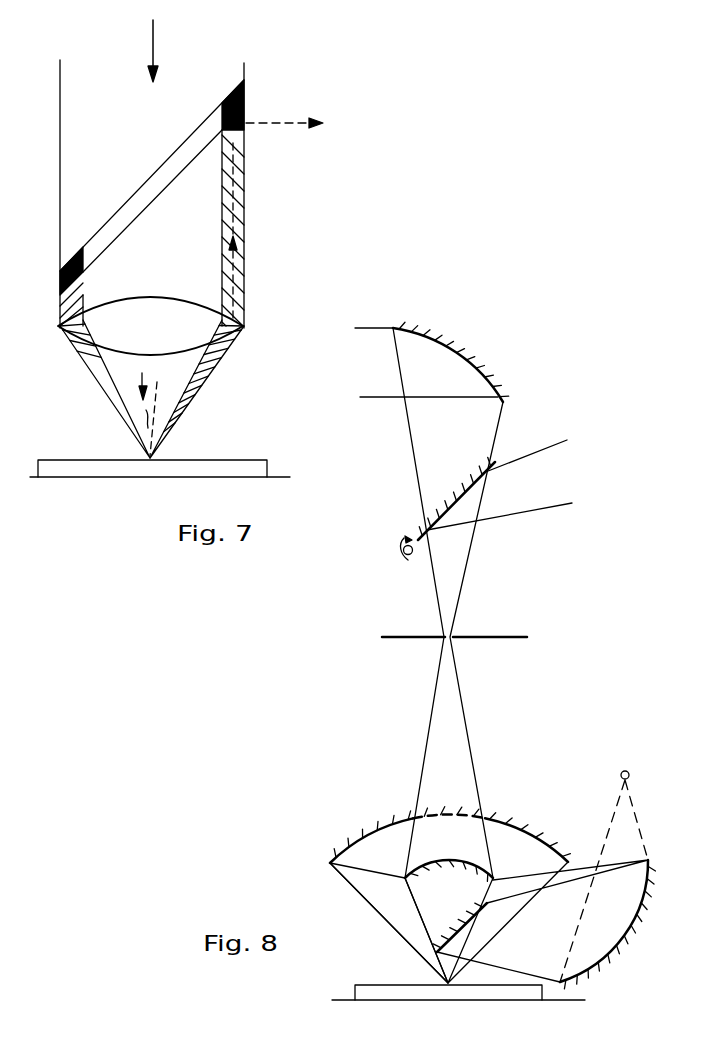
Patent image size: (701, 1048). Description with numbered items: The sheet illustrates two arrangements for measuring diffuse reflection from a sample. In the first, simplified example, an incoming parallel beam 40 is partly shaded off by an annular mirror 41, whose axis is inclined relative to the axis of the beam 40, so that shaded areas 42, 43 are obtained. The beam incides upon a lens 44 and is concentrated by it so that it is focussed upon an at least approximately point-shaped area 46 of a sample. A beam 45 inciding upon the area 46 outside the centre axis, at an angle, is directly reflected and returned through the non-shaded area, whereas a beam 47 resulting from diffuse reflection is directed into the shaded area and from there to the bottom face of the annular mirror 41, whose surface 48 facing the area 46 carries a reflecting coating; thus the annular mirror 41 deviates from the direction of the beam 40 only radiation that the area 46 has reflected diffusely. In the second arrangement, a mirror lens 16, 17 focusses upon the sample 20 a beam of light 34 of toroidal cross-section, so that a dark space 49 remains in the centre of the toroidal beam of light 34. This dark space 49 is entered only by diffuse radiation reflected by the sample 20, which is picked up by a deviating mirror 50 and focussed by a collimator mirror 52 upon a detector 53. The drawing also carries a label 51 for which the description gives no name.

In FIG. 7, the incoming parallel beam 40 is at (150, 46).
In FIG. 7, the annular mirror 41 is at (120, 218).
In FIG. 7, the shaded area 42 is at (100, 377).
In FIG. 7, the shaded area 43 is at (213, 369).
In FIG. 7, the lens 44 is at (165, 312).
In FIG. 7, the beam 45 is at (158, 408).
In FIG. 7, the point-shaped area 46 is at (151, 470).
In FIG. 7, the beam resulting from diffuse reflection 47 is at (247, 276).
In FIG. 7, the surface 48 is at (248, 122).
In FIG. 8, the mirror lens 16 is at (450, 863).
In FIG. 8, the mirror lens 17 is at (392, 822).
In FIG. 8, the sample 20 is at (370, 990).
In FIG. 8, the beam of light 34 is at (377, 898).
In FIG. 8, the dark space 49 is at (427, 923).
In FIG. 8, the deviating mirror 50 is at (449, 932).
In FIG. 8, the optical system / light beam 51 is at (575, 895).
In FIG. 8, the collimator mirror 52 is at (615, 940).
In FIG. 8, the detector 53 is at (627, 770).